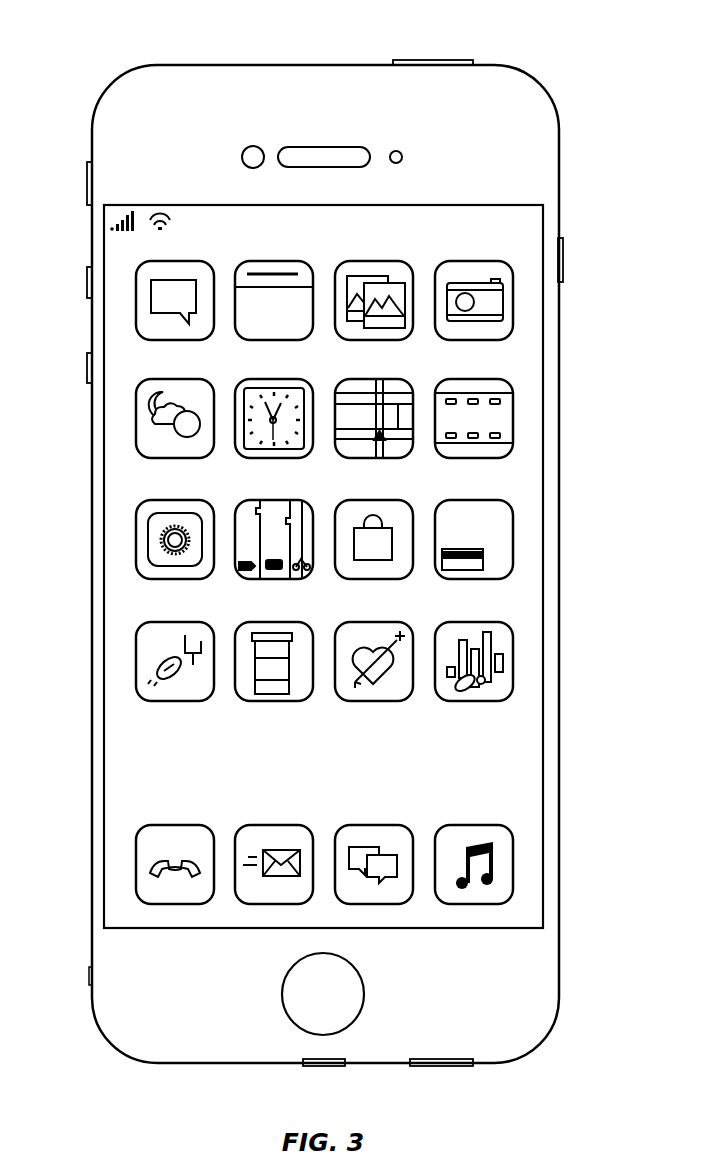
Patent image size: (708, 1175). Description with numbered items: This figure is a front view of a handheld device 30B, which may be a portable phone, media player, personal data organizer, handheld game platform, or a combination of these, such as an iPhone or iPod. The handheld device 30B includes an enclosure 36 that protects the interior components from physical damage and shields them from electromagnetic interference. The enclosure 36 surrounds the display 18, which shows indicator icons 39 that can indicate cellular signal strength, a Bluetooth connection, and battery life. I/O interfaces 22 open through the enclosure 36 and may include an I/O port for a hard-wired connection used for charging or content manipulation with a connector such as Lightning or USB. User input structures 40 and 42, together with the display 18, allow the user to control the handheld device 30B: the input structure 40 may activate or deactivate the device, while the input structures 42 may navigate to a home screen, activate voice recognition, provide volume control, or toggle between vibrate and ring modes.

The handheld device 30B is at (96, 59).
The enclosure 36 is at (559, 157).
The input structure 40 is at (434, 60).
The input structures 42 is at (86, 184).
The I/O interfaces 22 is at (323, 1068).
The display 18 is at (558, 612).
The indicator icons 39 is at (161, 210).